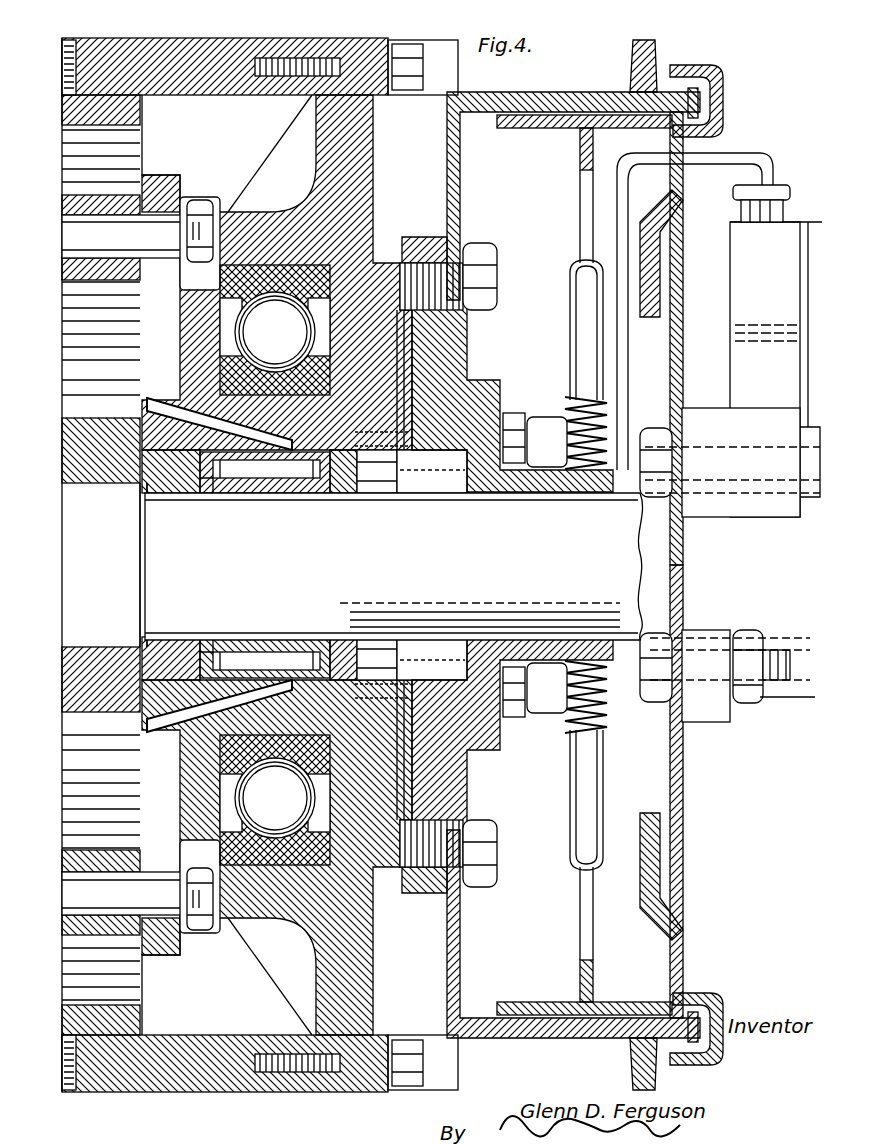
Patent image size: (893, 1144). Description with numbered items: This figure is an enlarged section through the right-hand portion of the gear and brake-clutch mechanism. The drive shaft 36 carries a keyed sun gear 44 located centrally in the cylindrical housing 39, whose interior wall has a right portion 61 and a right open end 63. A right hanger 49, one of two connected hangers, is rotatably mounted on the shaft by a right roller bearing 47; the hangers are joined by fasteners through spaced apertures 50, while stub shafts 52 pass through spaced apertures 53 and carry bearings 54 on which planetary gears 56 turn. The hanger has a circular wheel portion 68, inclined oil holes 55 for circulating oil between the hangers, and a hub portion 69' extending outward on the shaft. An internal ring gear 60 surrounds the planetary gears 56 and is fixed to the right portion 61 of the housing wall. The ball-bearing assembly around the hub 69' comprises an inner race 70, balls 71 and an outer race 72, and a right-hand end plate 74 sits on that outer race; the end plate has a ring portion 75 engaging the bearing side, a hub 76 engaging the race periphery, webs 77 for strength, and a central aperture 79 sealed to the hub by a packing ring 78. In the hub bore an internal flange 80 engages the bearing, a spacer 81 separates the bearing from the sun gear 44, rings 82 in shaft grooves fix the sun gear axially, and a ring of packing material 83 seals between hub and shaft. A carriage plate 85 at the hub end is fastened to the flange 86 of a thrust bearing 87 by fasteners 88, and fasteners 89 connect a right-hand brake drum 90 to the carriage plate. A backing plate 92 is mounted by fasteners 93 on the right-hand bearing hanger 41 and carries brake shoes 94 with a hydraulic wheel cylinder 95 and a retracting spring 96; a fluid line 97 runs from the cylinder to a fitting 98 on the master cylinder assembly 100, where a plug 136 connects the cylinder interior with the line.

The drive shaft 36 is at (394, 566).
The housing 39 is at (184, 1105).
The right-hand bearing hanger 41 is at (788, 702).
The sun gear 44 is at (100, 470).
The right roller bearing 47 is at (265, 495).
The right hanger 49 is at (180, 770).
The spaced apertures 50 is at (165, 205).
The stub shafts 52 is at (117, 868).
The spaced apertures 53 is at (195, 805).
The bearings 54 is at (75, 920).
The inclined oil holes 55 is at (155, 405).
The planetary gears 56 is at (75, 965).
The internal ring gear 60 is at (75, 118).
The right portion of interior wall 61 is at (62, 85).
The right open end 63 is at (305, 101).
The circular wheel portions 68 is at (163, 280).
The hub portion 69' is at (305, 488).
The inner race 70 is at (285, 378).
The balls 71 is at (269, 563).
The outer race 72 is at (375, 245).
The right-hand end plate 74 is at (372, 150).
The ring portion 75 is at (365, 185).
The hub 76 is at (260, 215).
The webs 77 is at (283, 150).
The packing ring 78 is at (453, 368).
The central aperture 79 is at (455, 343).
The internal flange 80 is at (355, 495).
The spacer 81 is at (170, 500).
The rings 82 is at (140, 493).
The ring of packing material 83 is at (385, 493).
The carriage plate 85 is at (445, 452).
The flange 86 is at (495, 393).
The thrust bearing 87 is at (537, 493).
The fasteners 88 is at (527, 427).
The fasteners 89 is at (490, 262).
The right-hand brake drum 90 is at (520, 93).
The backing plate 92 is at (724, 100).
The fasteners 93 is at (648, 493).
The brake shoes 94 is at (585, 125).
The hydraulic wheel cylinder 95 is at (640, 425).
The retracting spring 96 is at (614, 740).
The fluid line 97 is at (735, 153).
The fitting 98 is at (780, 185).
The master cylinder assembly 100 is at (722, 266).
The plug 136 is at (760, 303).